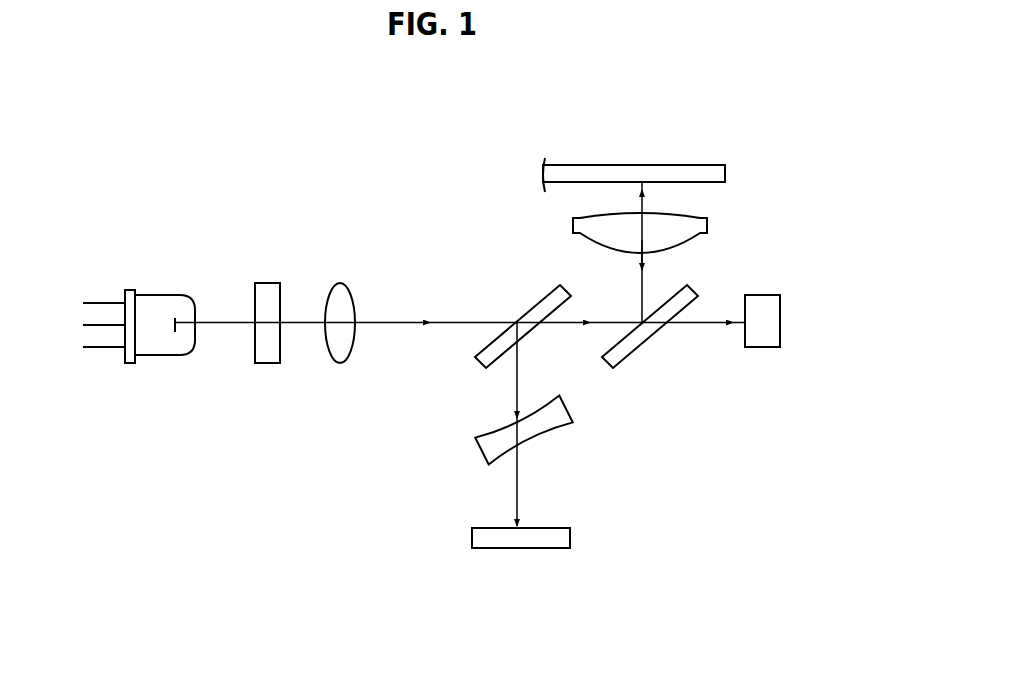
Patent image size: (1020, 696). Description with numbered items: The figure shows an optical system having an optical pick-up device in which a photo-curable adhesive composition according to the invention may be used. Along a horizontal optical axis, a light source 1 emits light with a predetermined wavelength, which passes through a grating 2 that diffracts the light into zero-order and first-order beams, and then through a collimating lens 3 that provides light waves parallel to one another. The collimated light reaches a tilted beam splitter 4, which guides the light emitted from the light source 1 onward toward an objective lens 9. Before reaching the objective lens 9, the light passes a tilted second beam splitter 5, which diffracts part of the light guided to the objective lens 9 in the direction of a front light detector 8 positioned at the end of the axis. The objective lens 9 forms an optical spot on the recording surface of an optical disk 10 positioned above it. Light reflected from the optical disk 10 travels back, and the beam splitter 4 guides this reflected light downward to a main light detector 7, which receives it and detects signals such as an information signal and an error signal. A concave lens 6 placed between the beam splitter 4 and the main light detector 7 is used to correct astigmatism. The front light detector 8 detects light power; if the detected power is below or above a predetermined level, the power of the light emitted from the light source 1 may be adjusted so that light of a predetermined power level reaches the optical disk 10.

The light source 1 is at (162, 305).
The grating 2 is at (265, 285).
The collimating lens 3 is at (338, 290).
The beam splitter 4 is at (541, 297).
The second beam splitter 5 is at (632, 348).
The concave lens 6 is at (553, 423).
The main light detector 7 is at (572, 538).
The front light detector 8 is at (760, 295).
The objective lens 9 is at (575, 226).
The optical disk 10 is at (612, 167).